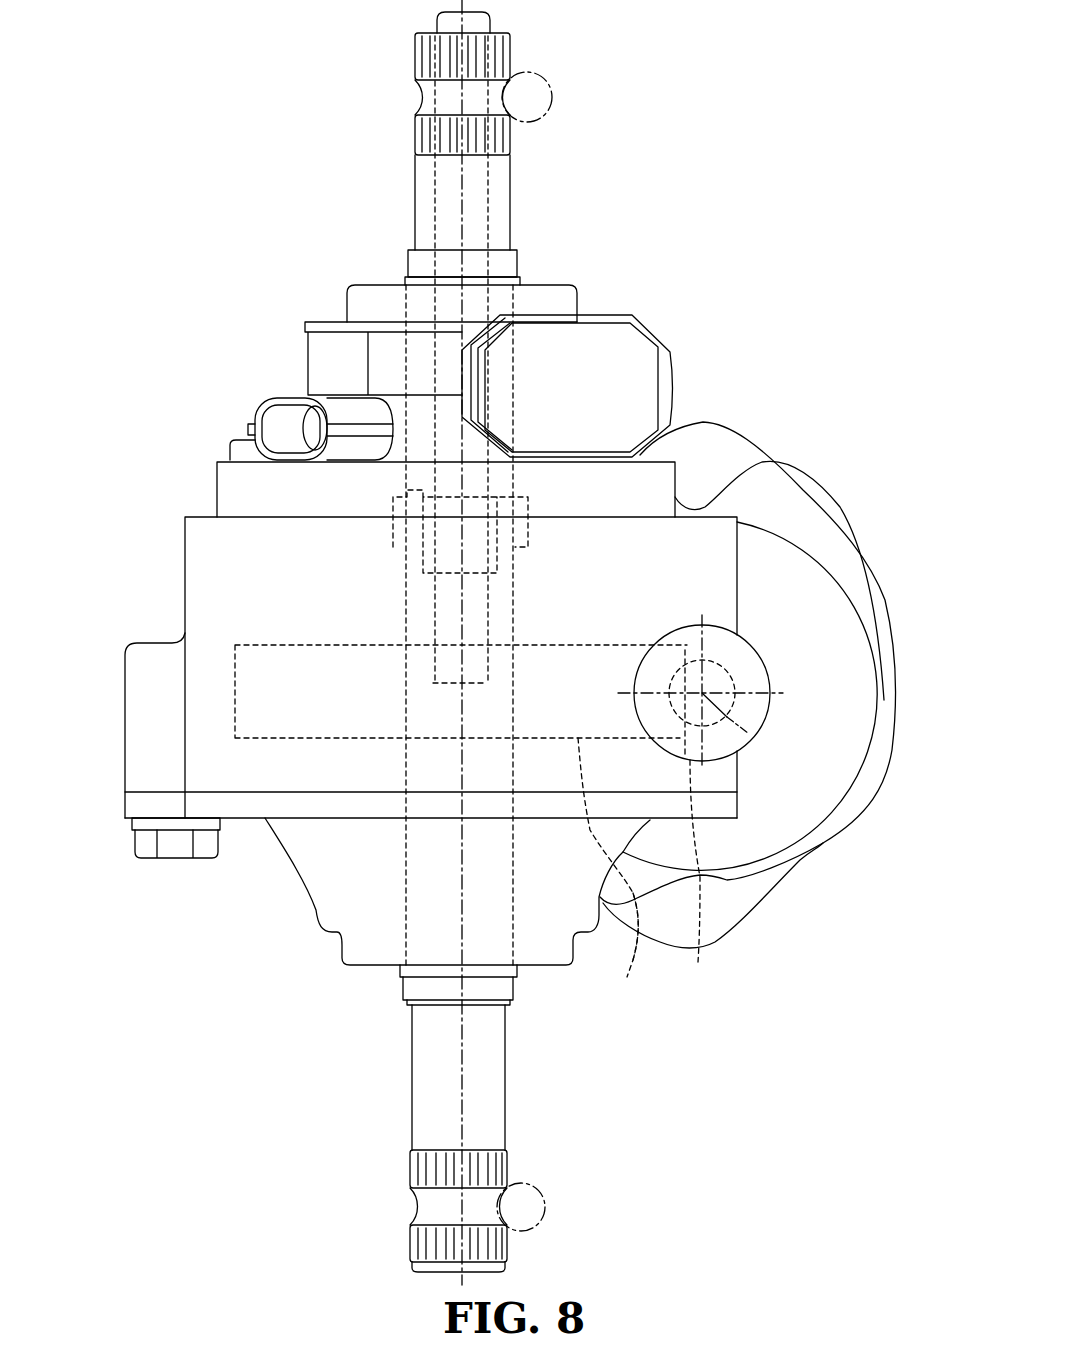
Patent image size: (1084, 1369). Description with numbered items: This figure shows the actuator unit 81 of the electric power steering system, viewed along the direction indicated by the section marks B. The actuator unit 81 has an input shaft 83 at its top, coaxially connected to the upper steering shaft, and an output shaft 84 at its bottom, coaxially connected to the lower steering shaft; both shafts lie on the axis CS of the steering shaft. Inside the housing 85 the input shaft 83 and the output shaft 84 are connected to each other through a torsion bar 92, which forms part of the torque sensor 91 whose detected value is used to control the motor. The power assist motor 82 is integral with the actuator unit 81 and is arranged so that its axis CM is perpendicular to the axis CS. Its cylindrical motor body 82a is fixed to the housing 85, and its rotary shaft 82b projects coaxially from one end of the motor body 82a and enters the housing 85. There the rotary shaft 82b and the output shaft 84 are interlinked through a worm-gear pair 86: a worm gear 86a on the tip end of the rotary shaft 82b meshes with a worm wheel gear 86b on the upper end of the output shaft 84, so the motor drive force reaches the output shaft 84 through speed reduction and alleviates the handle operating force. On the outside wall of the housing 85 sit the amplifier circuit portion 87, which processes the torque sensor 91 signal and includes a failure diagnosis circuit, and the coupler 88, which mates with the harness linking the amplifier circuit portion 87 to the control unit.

The actuator unit 81 is at (700, 258).
The input shaft 83 is at (510, 195).
The output shaft 84 is at (505, 1120).
The housing 85 is at (702, 527).
The worm-gear pair 86 is at (672, 902).
The worm gear 86a is at (709, 882).
The worm wheel gear 86b is at (638, 948).
The amplifier circuit portion 87 is at (613, 358).
The coupler 88 is at (270, 400).
The torque sensor 91 is at (487, 213).
The torsion bar 92 is at (558, 359).
The power assist motor 82 is at (842, 535).
The motor body 82a is at (765, 672).
The rotary shaft 82b is at (720, 680).
The axis of the power assist motor CM is at (748, 733).
The axis of the steering shaft CS is at (460, 1047).
The section line B- B is at (120, 693).